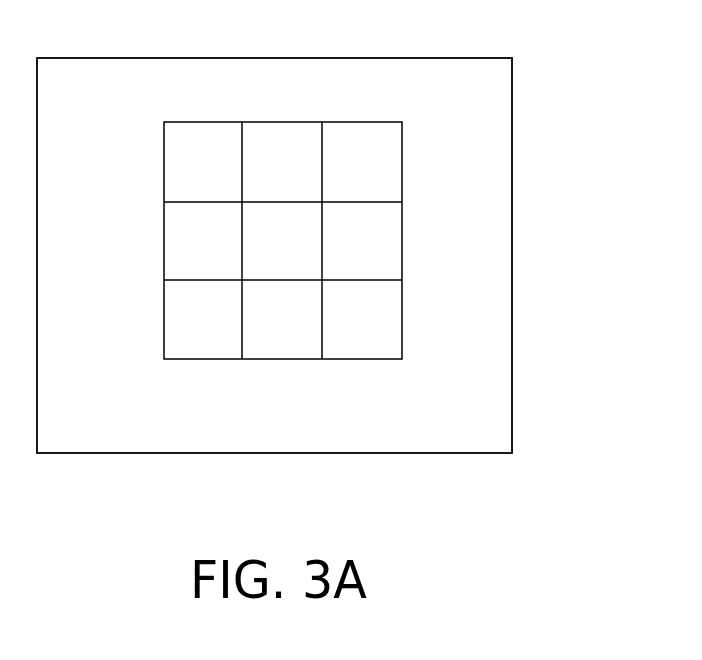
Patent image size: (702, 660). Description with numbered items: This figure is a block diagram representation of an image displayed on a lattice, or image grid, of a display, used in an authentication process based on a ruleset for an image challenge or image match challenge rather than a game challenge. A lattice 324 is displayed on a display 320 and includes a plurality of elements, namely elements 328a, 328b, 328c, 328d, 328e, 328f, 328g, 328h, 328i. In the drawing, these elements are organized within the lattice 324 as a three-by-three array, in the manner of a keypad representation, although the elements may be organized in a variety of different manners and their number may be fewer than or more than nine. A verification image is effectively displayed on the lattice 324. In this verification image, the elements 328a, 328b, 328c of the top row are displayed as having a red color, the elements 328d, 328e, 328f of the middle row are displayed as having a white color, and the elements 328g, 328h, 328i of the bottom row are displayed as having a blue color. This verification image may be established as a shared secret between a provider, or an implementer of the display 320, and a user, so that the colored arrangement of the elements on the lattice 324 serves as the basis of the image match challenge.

The display 320 is at (512, 255).
The lattice 324 is at (292, 121).
The element 328a is at (197, 122).
The element 328b is at (259, 122).
The element 328c is at (362, 122).
The element 328d is at (164, 255).
The element 328e is at (262, 225).
The element 328f is at (402, 237).
The element 328g is at (164, 318).
The element 328h is at (283, 359).
The element 328i is at (402, 325).